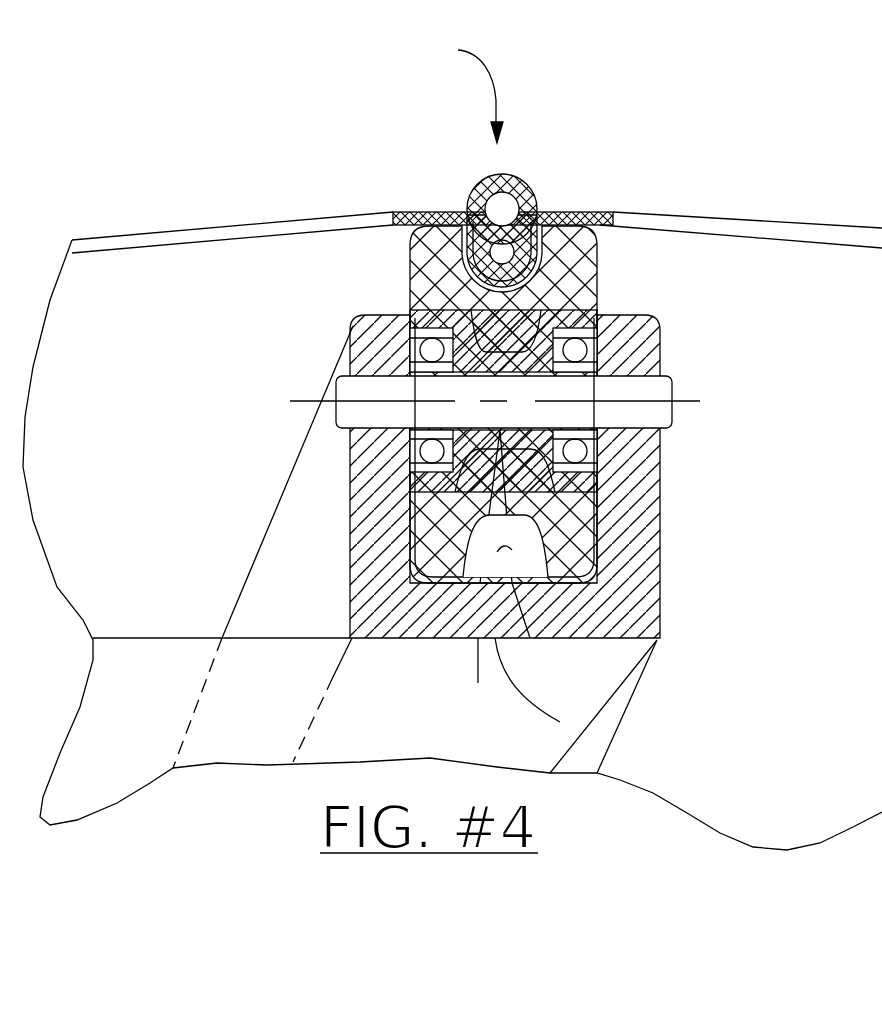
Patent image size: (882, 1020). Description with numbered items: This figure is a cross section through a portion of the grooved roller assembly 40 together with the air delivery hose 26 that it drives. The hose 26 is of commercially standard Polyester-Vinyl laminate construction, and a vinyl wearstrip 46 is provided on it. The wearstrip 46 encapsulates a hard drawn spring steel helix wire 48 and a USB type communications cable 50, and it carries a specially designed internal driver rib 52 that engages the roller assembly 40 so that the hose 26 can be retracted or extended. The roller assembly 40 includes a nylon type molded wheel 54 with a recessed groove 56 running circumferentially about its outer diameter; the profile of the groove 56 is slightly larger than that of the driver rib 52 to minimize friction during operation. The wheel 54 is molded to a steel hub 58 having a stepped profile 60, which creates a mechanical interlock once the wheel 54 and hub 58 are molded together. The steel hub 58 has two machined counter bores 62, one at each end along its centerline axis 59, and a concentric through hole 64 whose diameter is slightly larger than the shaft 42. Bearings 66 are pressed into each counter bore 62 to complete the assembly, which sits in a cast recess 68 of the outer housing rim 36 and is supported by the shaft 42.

The air delivery hose 26 is at (696, 215).
The outer housing rim 36 is at (478, 683).
The grooved roller assembly 40 is at (374, 273).
The shaft 42 is at (672, 375).
The vinyl wearstrip 46 is at (455, 89).
The spring steel helix wire 48 is at (524, 195).
The USB type communications cable 50 is at (607, 213).
The internal driver rib 52 is at (505, 310).
The molded wheel 54 is at (597, 553).
The recessed groove 56 is at (530, 638).
The steel hub 58 is at (360, 563).
The centerline axis 59 is at (351, 428).
The stepped profile 60 is at (440, 297).
The counter bore 62 is at (367, 530).
The through hole 64 is at (480, 583).
The bearing 66 is at (357, 328).
The cast recess 68 is at (560, 722).